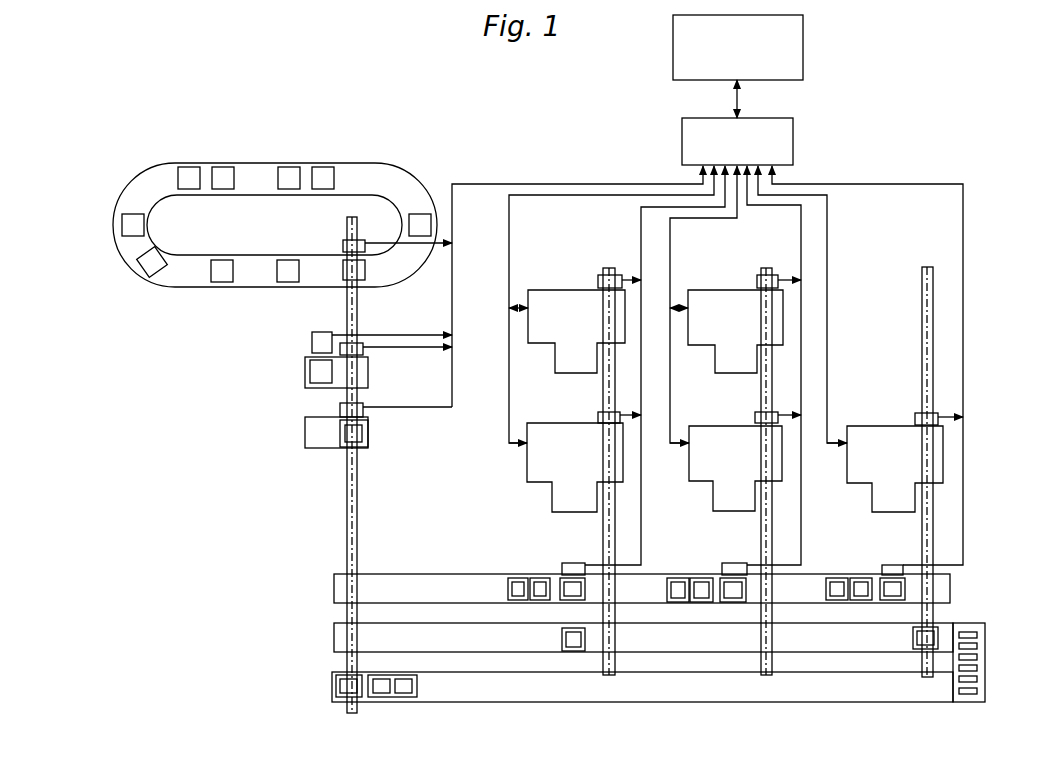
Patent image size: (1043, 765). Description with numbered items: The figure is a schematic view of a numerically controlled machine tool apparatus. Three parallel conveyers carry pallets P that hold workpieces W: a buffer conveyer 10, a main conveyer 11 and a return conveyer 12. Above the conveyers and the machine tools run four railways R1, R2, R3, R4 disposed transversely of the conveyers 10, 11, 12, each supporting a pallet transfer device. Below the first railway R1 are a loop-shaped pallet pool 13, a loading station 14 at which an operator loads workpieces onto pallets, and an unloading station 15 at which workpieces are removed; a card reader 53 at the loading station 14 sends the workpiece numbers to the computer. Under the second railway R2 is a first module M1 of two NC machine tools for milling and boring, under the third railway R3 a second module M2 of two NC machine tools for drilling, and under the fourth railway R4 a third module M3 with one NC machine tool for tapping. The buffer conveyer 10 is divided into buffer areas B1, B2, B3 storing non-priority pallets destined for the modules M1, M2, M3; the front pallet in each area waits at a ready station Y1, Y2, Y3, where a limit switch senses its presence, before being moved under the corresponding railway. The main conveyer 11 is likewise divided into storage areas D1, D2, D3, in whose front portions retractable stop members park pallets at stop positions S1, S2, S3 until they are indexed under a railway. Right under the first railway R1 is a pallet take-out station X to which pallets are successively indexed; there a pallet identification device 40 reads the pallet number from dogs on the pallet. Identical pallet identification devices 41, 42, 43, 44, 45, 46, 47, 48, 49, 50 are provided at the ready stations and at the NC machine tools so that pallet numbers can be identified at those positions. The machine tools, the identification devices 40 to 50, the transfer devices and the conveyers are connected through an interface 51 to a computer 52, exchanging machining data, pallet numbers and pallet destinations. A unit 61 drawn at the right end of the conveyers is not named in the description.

The pallet pool 13 is at (270, 163).
The pallet identification device 40 is at (343, 246).
The pallet identification device 41 is at (363, 351).
The pallet identification device 42 is at (363, 411).
The card reader 53 is at (312, 342).
The loading station 14 is at (305, 376).
The unloading station 15 is at (305, 441).
The buffer conveyer 10 is at (334, 590).
The main conveyer 11 is at (334, 640).
The return conveyer 12 is at (332, 690).
The pallet identification device 43 is at (576, 563).
The pallet identification device 44 is at (737, 563).
The pallet identification device 45 is at (895, 565).
The pallet identification device 46 is at (598, 418).
The pallet identification device 47 is at (597, 280).
The pallet identification device 48 is at (755, 418).
The pallet identification device 49 is at (757, 280).
The pallet identification device 50 is at (915, 418).
The interface 51 is at (793, 141).
The computer 52 is at (803, 59).
The pallet stocker 61 is at (985, 623).
The first railway R1 is at (347, 228).
The second railway R2 is at (611, 268).
The third railway R3 is at (767, 268).
The fourth railway R4 is at (925, 272).
The first module M1 is at (552, 280).
The second module M2 is at (708, 286).
The third module M3 is at (868, 425).
The first buffer area B1 is at (487, 574).
The second buffer area B2 is at (664, 574).
The third buffer area B3 is at (823, 574).
The ready station Y1 is at (558, 578).
The ready station Y2 is at (719, 578).
The ready station Y3 is at (878, 578).
The first storage area D1 is at (489, 647).
The second storage area D2 is at (665, 649).
The third storage area D3 is at (827, 649).
The stop position S1 is at (562, 650).
The stop position S2 is at (730, 649).
The stop position S3 is at (912, 648).
The pallet P is at (222, 282).
The workpiece W is at (355, 445).
The pallet take-out station X is at (343, 282).